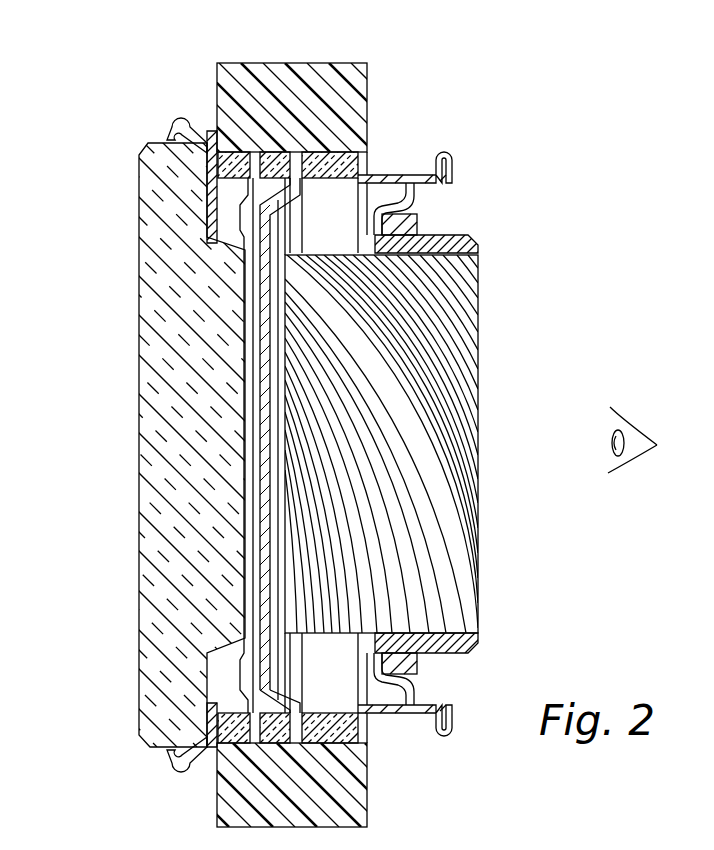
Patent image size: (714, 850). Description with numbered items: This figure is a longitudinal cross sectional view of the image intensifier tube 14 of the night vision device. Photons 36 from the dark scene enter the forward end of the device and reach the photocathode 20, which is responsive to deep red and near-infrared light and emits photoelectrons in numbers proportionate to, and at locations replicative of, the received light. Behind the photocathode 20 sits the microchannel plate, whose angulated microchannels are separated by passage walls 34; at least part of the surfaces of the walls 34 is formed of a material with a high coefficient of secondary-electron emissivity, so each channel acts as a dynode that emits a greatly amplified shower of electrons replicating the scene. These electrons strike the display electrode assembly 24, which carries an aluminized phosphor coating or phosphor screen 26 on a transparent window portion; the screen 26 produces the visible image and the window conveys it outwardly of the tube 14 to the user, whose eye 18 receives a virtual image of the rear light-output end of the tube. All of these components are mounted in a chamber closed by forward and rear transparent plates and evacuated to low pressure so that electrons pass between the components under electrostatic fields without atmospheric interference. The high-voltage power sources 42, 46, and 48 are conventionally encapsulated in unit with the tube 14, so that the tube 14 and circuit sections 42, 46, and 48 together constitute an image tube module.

The high-voltage power source 42 is at (306, 417).
The high-voltage power source 46 is at (306, 417).
The high-voltage power source 48 is at (318, 58).
The image intensifier tube 14 is at (487, 138).
The phosphor screen 26 is at (278, 257).
The passage walls 34 is at (245, 303).
The photocathode 20 is at (236, 412).
The photons 36 is at (128, 515).
The display electrode assembly 24 is at (479, 502).
The user's eye 18 is at (638, 418).